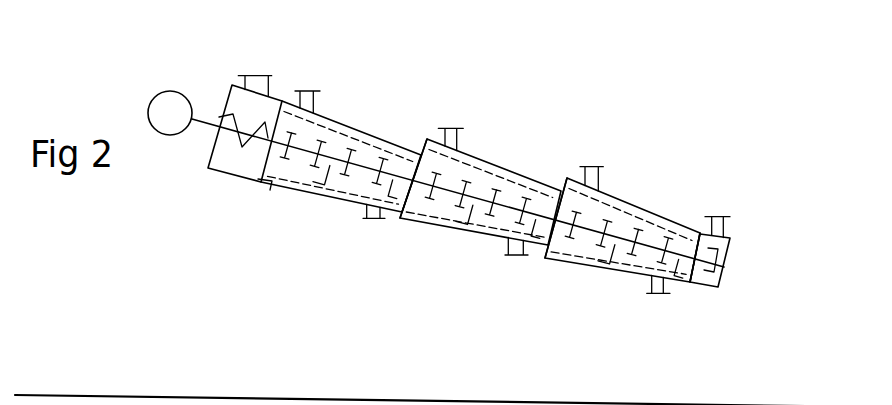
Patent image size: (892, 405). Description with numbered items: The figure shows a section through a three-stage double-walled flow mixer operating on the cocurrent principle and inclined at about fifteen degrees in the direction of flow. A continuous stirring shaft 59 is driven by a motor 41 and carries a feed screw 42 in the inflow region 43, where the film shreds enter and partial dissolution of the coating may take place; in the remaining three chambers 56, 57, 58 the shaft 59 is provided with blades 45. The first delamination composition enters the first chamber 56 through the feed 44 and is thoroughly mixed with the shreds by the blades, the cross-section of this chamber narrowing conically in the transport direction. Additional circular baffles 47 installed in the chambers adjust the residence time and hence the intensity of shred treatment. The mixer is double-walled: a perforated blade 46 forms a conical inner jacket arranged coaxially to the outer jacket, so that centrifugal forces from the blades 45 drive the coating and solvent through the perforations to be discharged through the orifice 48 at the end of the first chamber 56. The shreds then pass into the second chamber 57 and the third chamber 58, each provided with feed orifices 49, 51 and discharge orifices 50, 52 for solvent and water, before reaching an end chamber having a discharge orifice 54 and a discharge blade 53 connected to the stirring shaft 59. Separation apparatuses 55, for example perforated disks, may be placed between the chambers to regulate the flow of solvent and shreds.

The motor 41 is at (147, 112).
The feed screw 42 is at (222, 117).
The inflow region 43 is at (257, 58).
The feed 44 is at (308, 76).
The blades 45 is at (285, 149).
The perforated blade 46 is at (268, 192).
The circular baffles 47 is at (319, 185).
The orifice 48 is at (373, 223).
The feed orifice 49 is at (452, 113).
The discharge orifice 50 is at (517, 262).
The feed orifice 51 is at (592, 151).
The discharge orifice 52 is at (658, 300).
The discharge blade 53 is at (705, 287).
The discharge orifice 54 is at (717, 213).
The separation apparatuses 55 is at (404, 216).
The first chamber 56 is at (345, 199).
The second chamber 57 is at (487, 234).
The third chamber 58 is at (631, 273).
The stirring shaft 59 is at (731, 260).